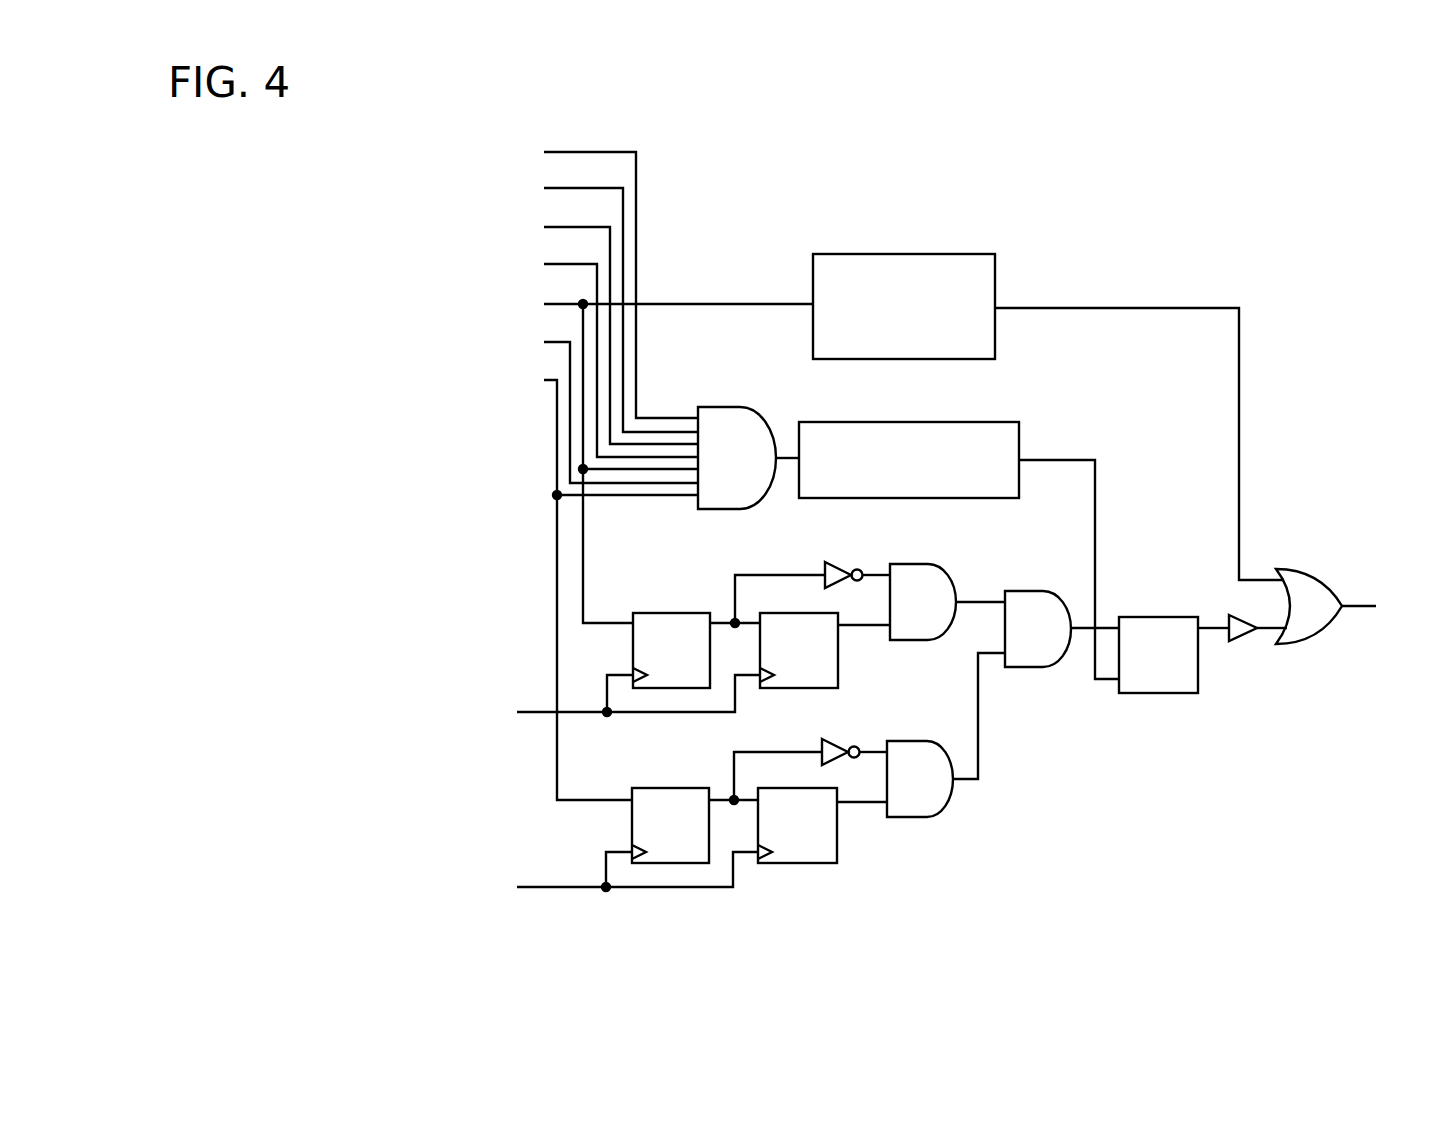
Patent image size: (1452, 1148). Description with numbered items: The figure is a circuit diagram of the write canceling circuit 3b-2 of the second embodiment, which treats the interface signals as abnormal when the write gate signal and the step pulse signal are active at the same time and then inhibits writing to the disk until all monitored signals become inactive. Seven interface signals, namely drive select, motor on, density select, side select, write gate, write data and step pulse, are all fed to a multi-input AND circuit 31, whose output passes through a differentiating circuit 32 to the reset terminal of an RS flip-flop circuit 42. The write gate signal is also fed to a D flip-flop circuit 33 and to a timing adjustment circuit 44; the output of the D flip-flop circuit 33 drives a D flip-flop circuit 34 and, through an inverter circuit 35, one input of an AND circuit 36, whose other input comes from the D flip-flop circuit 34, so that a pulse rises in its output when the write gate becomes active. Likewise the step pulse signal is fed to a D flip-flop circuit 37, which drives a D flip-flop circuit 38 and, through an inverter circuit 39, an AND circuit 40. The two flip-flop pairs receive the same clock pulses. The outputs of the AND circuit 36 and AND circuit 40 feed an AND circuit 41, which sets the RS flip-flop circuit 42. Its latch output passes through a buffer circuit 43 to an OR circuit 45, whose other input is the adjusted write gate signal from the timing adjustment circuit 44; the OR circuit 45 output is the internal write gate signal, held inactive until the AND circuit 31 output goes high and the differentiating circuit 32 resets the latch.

The write canceling circuit 3b-2 is at (1233, 193).
The AND circuit 31 is at (716, 407).
The differentiating circuit 32 is at (903, 422).
The D flip-flop circuit 33 is at (673, 613).
The D flip-flop circuit 34 is at (798, 613).
The inverter circuit 35 is at (833, 563).
The AND circuit 36 is at (910, 564).
The D flip-flop circuit 37 is at (670, 788).
The D flip-flop circuit 38 is at (798, 788).
The inverter circuit 39 is at (830, 740).
The AND circuit 40 is at (908, 741).
The AND circuit 41 is at (1025, 591).
The RS flip-flop circuit 42 is at (1161, 617).
The buffer circuit 43 is at (1243, 615).
The timing adjustment circuit 44 is at (904, 254).
The OR circuit 45 is at (1290, 569).